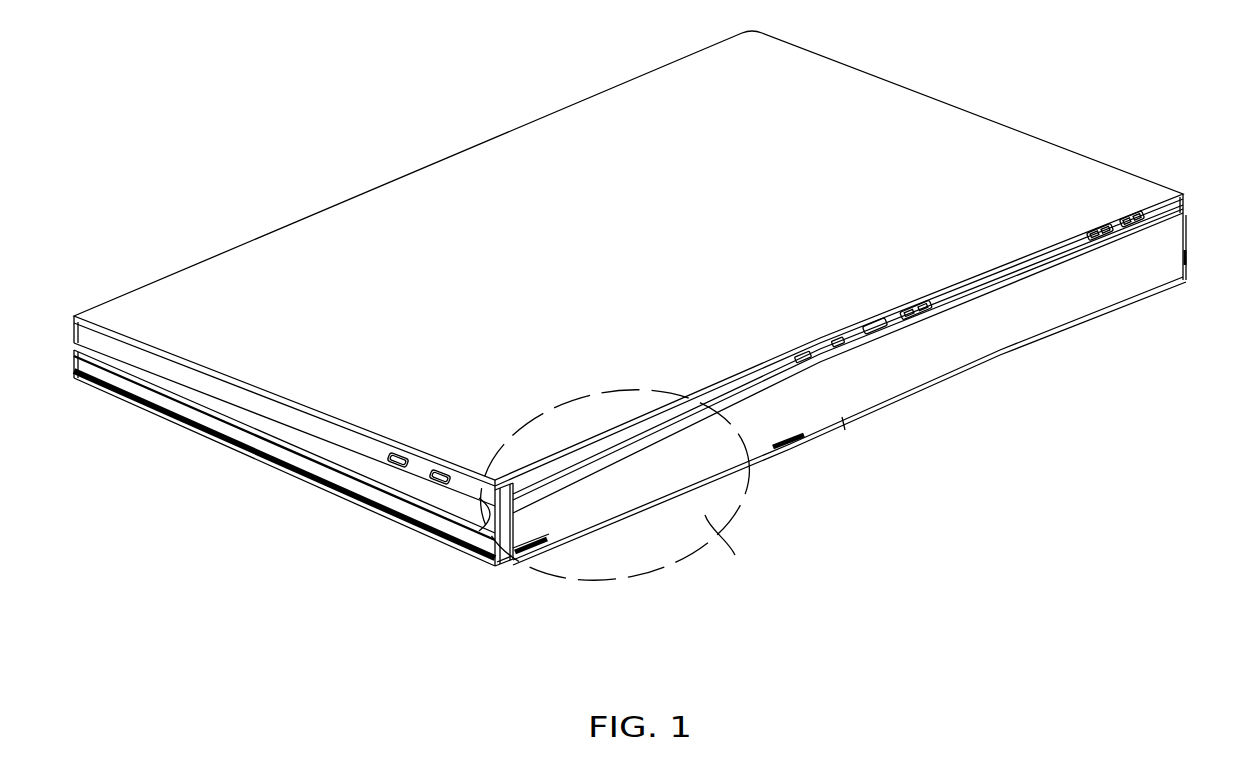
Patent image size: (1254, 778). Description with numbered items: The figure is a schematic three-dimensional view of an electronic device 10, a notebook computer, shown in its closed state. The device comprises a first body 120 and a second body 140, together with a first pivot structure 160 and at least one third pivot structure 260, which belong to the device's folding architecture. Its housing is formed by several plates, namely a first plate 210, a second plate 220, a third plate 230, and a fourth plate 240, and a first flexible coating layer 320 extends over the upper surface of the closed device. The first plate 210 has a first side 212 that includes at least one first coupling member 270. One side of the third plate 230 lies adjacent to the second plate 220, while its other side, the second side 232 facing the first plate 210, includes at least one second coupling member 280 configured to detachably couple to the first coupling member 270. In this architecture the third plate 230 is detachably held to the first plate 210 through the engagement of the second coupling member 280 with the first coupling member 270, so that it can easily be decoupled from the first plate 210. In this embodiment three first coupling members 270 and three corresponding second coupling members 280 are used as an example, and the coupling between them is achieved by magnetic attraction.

The electronic device 10 is at (662, 344).
The first flexible coating layer 320 is at (960, 130).
The second plate 220 is at (1183, 192).
The first pivot structure 160 is at (1172, 243).
The fourth plate 240 is at (1148, 298).
The third pivot structure 260 is at (1114, 240).
The second body 140 is at (262, 407).
The first body 120 is at (295, 460).
The third plate 230 is at (472, 478).
The first plate 210 is at (472, 563).
The second side 232 is at (495, 560).
The first coupling member 270 is at (530, 568).
The second coupling member 280 is at (543, 484).
The first side 212 is at (615, 540).